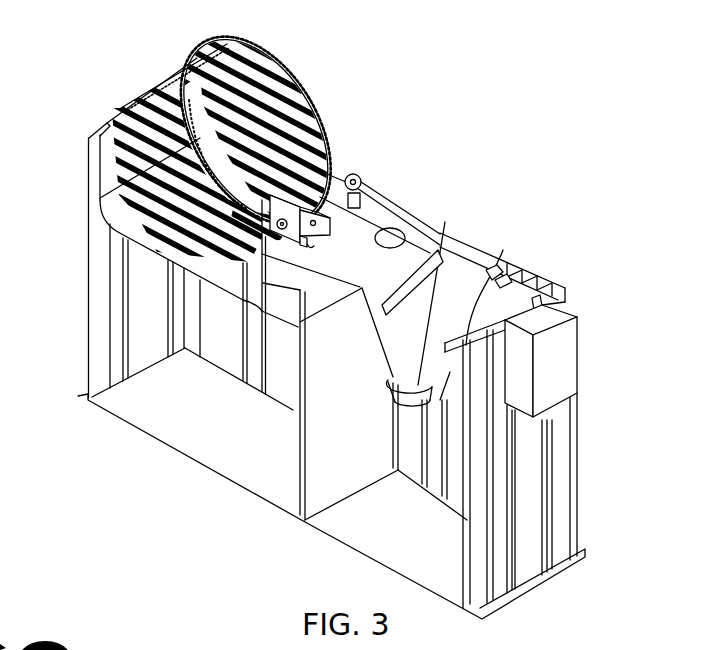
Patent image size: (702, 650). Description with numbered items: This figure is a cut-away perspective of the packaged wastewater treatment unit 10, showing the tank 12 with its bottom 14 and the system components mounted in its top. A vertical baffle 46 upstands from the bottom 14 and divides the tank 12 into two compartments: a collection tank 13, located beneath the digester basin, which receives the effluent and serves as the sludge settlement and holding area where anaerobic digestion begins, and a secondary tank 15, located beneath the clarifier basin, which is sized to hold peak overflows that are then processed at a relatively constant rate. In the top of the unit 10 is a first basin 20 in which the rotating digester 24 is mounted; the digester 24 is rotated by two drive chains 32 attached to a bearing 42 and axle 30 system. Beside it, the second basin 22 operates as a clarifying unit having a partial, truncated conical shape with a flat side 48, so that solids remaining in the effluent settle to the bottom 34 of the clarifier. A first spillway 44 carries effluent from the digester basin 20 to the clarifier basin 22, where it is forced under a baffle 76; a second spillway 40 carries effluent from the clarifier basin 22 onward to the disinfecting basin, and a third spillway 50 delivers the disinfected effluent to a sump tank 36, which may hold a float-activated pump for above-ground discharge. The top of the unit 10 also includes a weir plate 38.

The packaged unit 10 is at (71, 115).
The tank 12 is at (303, 371).
The collection tank 13 is at (119, 404).
The bottom 14 is at (204, 425).
The secondary tank 15 is at (331, 522).
The first basin 20 is at (170, 232).
The second basin 22 is at (488, 246).
The rotating digester 24 is at (214, 166).
The axle 30 is at (383, 148).
The drive chains 32 is at (279, 130).
The bottom of the clarifier basin 34 is at (512, 207).
The sump tank 36 is at (592, 361).
The weir plate 38 is at (537, 246).
The second spillway 40 is at (529, 231).
The bearing 42 is at (346, 187).
The first spillway 44 is at (422, 187).
The vertical baffle 46 is at (351, 436).
The flat side 48 is at (407, 342).
The third spillway 50 is at (578, 266).
The baffle 76 is at (452, 291).